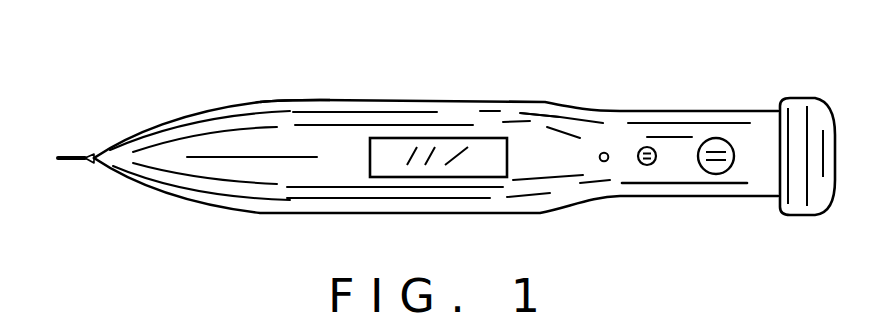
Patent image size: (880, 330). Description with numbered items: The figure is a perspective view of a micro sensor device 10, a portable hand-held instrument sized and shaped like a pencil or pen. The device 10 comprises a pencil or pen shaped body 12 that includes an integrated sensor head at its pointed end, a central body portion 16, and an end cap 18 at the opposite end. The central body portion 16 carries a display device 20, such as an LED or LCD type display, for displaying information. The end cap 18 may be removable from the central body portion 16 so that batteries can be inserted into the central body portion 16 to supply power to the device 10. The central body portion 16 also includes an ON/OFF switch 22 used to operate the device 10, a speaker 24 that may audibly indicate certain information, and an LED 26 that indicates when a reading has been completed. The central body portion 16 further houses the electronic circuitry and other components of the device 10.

The micro sensor device 10 is at (251, 80).
The pencil or pen shaped body 12 is at (283, 137).
The central body portion 16 is at (530, 121).
The end cap 18 is at (805, 128).
The display device 20 is at (453, 162).
The ON/OFF switch 22 is at (651, 164).
The speaker 24 is at (723, 166).
The LED 26 is at (607, 162).